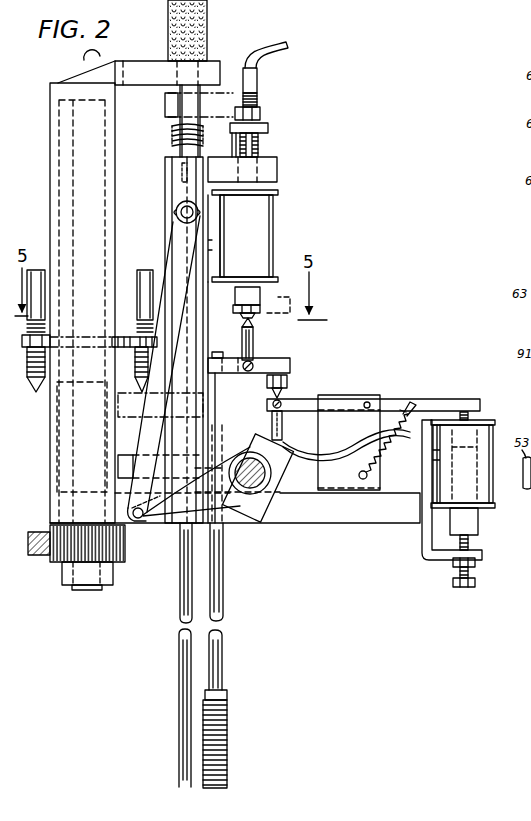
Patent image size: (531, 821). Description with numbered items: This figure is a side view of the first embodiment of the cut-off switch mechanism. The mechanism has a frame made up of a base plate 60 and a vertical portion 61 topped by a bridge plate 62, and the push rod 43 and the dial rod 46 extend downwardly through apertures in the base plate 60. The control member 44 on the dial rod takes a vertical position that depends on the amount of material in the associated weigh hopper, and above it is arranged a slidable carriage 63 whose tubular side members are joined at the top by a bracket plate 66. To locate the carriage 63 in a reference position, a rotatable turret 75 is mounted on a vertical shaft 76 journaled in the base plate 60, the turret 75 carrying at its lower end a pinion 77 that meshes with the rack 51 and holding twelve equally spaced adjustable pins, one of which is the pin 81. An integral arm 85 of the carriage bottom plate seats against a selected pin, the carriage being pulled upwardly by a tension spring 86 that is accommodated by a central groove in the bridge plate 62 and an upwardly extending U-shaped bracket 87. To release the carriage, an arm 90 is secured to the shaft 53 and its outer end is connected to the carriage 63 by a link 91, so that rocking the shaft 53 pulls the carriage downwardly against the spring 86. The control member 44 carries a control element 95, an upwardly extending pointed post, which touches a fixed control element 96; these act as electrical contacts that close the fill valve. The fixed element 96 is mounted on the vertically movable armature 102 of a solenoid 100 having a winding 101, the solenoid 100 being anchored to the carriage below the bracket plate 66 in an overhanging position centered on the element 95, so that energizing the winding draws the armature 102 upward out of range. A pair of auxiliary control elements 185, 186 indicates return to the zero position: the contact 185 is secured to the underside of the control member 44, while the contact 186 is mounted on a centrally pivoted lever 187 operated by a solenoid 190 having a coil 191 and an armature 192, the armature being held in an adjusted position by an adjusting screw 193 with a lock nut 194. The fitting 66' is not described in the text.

The bridge plate 62 is at (115, 61).
The U-shaped bracket 87 is at (208, 32).
The vertical portion 61 is at (50, 186).
The carriage 63 is at (162, 196).
The rod end 66' is at (189, 106).
The tension spring 86 is at (172, 138).
The bracket plate 66 is at (248, 112).
The solenoid 100 is at (260, 236).
The winding 101 is at (270, 251).
The armature 102 is at (235, 298).
The fixed control element 96 is at (254, 317).
The control element 95 is at (254, 341).
The control member 44 is at (276, 300).
The adjustable pin 81 is at (145, 270).
The rotatable turret 75 is at (117, 337).
The link 91 is at (180, 280).
The arm 90 is at (173, 510).
The arm 85 is at (127, 455).
The shaft 53 is at (276, 492).
The base plate 60 is at (347, 521).
The auxiliary control element 185 is at (288, 384).
The auxiliary control element 186 is at (283, 394).
The lever 187 is at (388, 400).
The solenoid 190 is at (474, 486).
The coil 191 is at (488, 485).
The armature 192 is at (479, 528).
The lock nut 194 is at (476, 562).
The adjusting screw 193 is at (469, 577).
The pinion 77 is at (126, 548).
The rack 51 is at (35, 556).
The vertical shaft 76 is at (90, 590).
The push rod 43 is at (180, 596).
The dial rod 46 is at (224, 598).